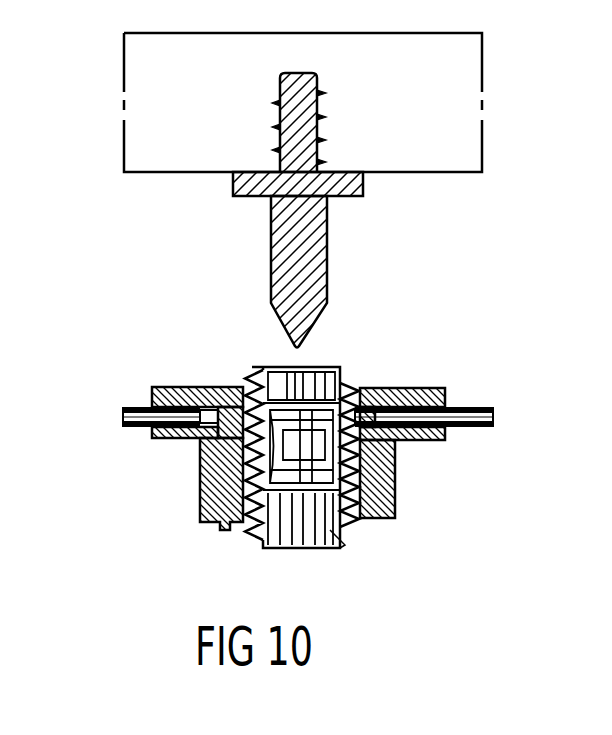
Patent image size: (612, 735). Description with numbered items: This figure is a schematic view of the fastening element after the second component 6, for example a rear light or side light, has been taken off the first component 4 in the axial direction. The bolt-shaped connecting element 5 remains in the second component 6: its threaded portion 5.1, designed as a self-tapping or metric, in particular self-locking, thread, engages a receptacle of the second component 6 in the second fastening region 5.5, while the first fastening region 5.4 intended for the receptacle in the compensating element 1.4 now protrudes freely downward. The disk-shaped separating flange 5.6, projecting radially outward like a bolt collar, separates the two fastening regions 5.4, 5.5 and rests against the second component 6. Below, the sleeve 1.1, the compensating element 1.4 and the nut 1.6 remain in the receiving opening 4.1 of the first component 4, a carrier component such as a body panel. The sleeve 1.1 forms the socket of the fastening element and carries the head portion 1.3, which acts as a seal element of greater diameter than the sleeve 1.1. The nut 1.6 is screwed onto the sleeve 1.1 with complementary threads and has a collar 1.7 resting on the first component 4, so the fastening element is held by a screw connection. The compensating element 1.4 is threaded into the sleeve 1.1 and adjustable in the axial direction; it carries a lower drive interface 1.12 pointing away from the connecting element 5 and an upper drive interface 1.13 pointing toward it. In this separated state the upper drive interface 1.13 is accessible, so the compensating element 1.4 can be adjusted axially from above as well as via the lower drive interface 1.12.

The second component 6 is at (470, 64).
The connecting element 5 is at (281, 210).
The threaded portion 5.1 is at (327, 138).
The first fastening region 5.4 is at (315, 268).
The second fastening region 5.5 is at (277, 118).
The separating flange 5.6 is at (233, 187).
The sleeve 1.1 is at (312, 457).
The head portion 1.3 is at (445, 388).
The compensating element 1.4 is at (345, 540).
The nut 1.6 is at (210, 500).
The collar 1.7 is at (152, 437).
The lower drive interface 1.12 is at (255, 543).
The upper drive interface 1.13 is at (256, 380).
The first component 4 is at (490, 417).
The receiving opening 4.1 is at (380, 430).